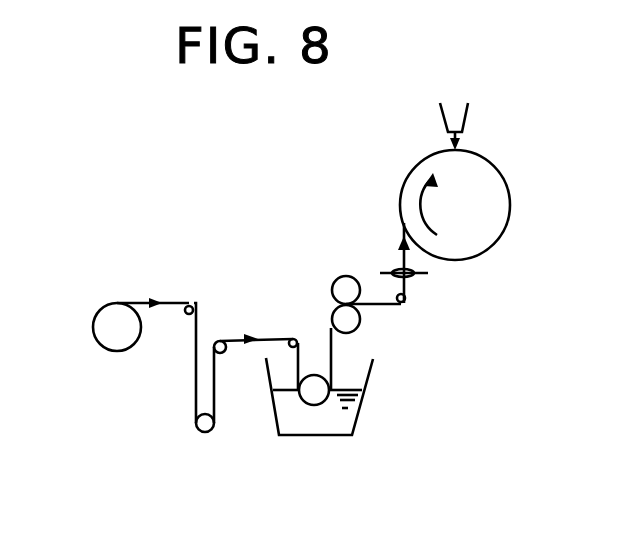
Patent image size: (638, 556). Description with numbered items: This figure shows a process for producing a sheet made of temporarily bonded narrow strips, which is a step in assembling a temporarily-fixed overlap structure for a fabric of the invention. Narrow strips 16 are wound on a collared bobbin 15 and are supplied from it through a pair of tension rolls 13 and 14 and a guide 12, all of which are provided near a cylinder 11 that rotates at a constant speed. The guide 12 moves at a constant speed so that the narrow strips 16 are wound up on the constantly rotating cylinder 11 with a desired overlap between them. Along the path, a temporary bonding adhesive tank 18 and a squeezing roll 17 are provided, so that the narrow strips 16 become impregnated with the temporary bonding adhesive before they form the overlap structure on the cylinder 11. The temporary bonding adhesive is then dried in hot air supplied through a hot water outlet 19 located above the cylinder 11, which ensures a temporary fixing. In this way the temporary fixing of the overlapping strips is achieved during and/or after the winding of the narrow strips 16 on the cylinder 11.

The cylinder 11 is at (497, 212).
The guide 12 is at (417, 278).
The tension roll 13 is at (200, 432).
The tension roll 14 is at (223, 338).
The collared bobbin 15 is at (108, 342).
The narrow strips 16 is at (195, 378).
The squeezing roll 17 is at (350, 319).
The temporary bonding adhesive tank 18 is at (318, 428).
The hot water outlet 19 is at (457, 113).